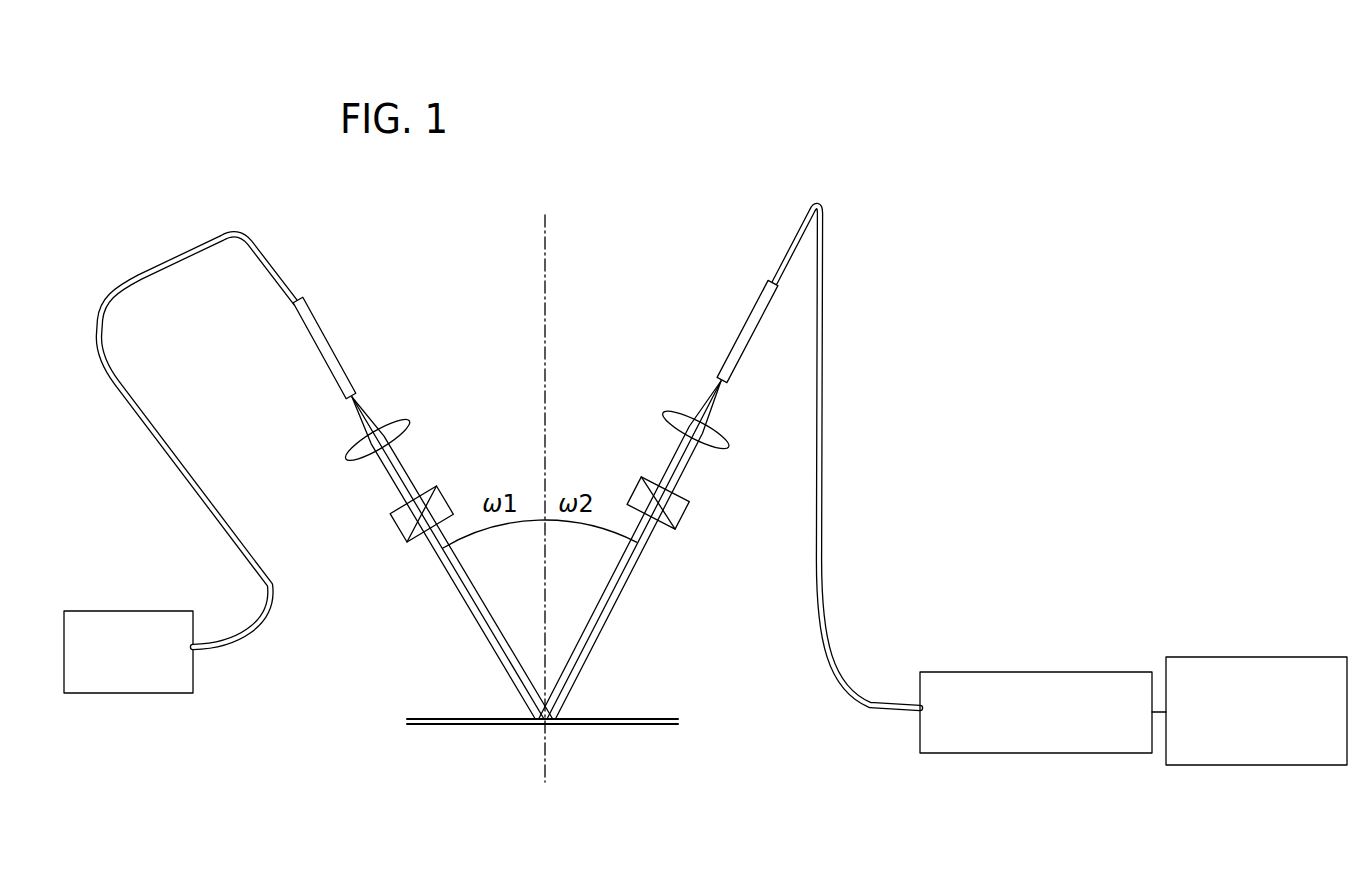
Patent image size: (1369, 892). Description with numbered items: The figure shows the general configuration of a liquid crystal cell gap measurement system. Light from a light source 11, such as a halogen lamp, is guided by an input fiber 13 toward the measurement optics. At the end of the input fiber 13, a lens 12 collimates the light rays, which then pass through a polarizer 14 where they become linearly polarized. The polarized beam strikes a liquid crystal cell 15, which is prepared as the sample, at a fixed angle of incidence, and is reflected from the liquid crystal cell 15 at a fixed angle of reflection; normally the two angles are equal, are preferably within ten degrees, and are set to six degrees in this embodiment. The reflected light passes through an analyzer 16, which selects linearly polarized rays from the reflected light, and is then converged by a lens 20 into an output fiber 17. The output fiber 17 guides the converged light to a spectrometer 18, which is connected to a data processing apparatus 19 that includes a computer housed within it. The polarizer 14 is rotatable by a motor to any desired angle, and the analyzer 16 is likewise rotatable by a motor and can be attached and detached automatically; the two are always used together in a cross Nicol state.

The light source 11 is at (120, 611).
The lens 12 is at (416, 423).
The input fiber 13 is at (148, 277).
The polarizer 14 is at (446, 495).
The liquid crystal cell 15 is at (650, 718).
The analyzer 16 is at (640, 480).
The output fiber 17 is at (823, 386).
The spectrometer 18 is at (975, 672).
The data processing apparatus 19 is at (1233, 657).
The lens 20 is at (665, 412).